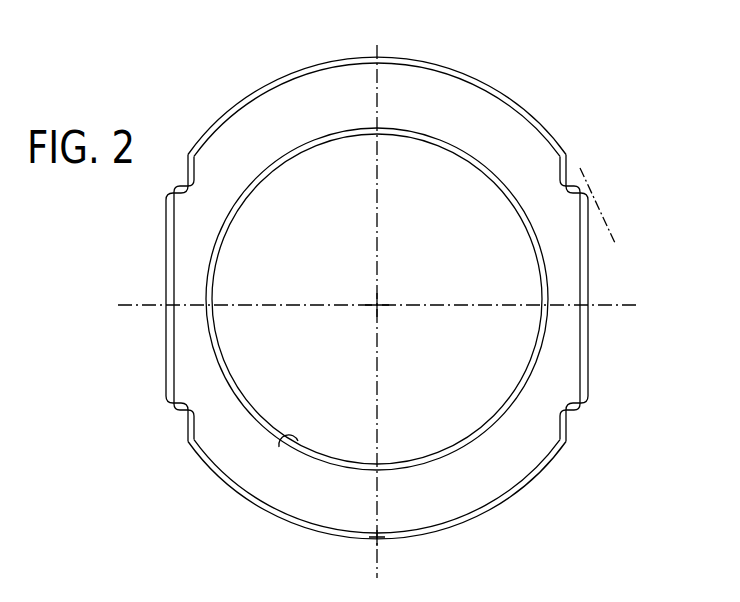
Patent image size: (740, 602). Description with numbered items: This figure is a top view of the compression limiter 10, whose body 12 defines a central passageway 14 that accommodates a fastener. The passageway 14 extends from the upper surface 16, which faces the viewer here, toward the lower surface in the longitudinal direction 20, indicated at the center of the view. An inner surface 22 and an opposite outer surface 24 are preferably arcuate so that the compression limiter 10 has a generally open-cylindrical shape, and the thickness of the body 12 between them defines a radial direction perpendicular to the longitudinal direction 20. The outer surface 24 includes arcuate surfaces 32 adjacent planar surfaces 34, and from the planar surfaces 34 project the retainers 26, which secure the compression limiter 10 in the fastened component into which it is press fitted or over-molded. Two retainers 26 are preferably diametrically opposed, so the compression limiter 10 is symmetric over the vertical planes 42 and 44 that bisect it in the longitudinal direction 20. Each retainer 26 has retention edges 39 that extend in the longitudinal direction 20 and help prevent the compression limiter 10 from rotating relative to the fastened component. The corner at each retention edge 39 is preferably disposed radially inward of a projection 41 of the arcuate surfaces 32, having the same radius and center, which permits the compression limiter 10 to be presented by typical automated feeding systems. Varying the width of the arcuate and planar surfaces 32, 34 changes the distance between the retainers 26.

The compression limiter 10 is at (602, 93).
The body 12 is at (553, 473).
The passageway 14 is at (325, 187).
The upper surface 16 is at (440, 113).
The longitudinal direction 20 is at (380, 303).
The inner surface 22 is at (283, 437).
The outer surface 24 is at (288, 525).
The retainer 26 is at (166, 290).
The arcuate surface 32 is at (454, 61).
The planar surface 34 is at (186, 172).
The retention edge 39 is at (167, 186).
The projection of the arcuate surfaces 41 is at (594, 194).
The vertical plane 42 is at (525, 308).
The vertical plane 44 is at (370, 553).